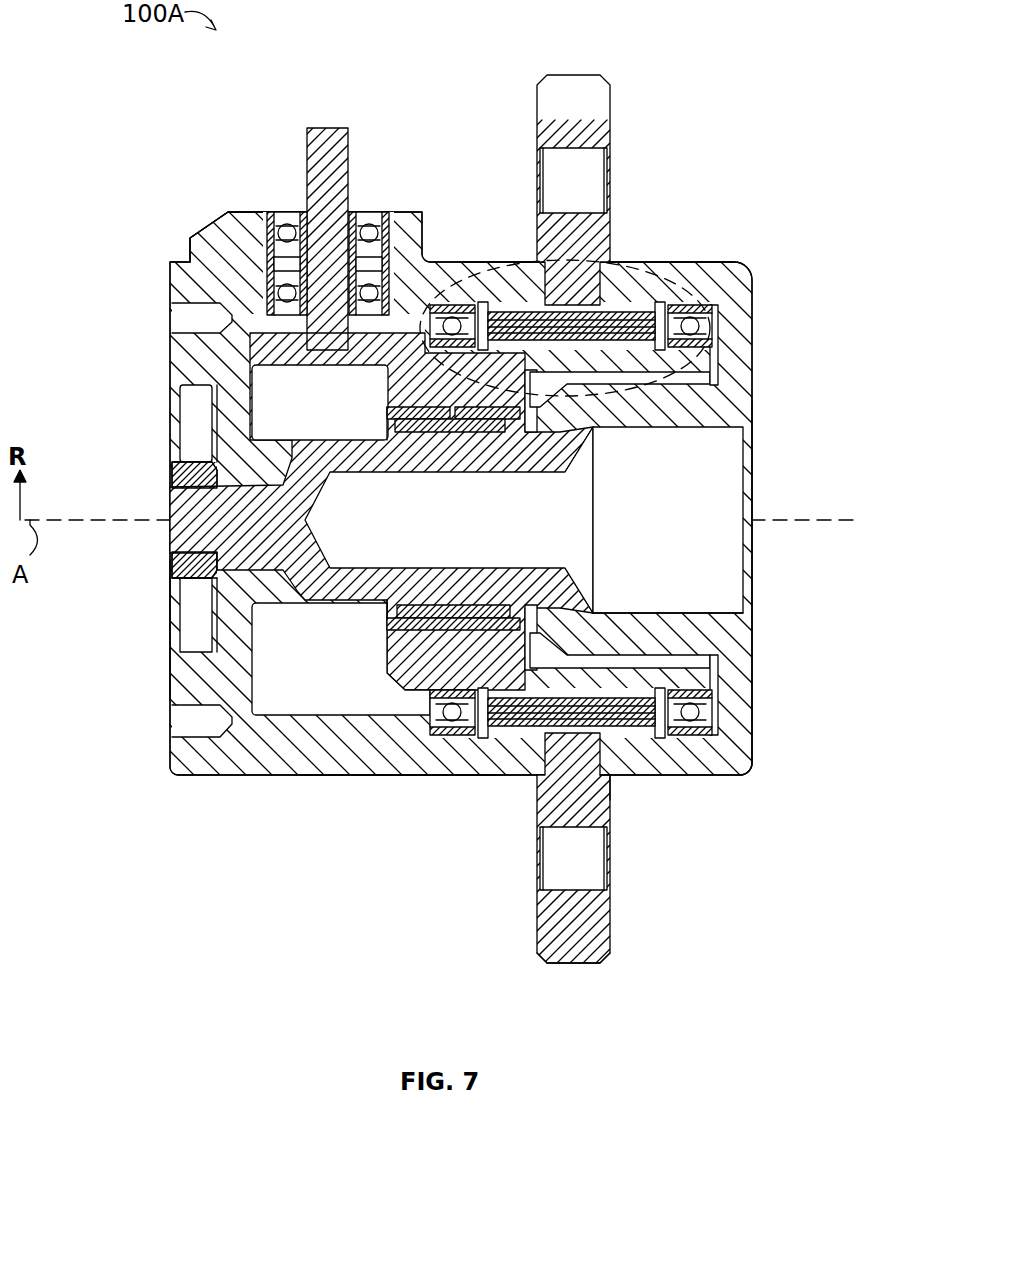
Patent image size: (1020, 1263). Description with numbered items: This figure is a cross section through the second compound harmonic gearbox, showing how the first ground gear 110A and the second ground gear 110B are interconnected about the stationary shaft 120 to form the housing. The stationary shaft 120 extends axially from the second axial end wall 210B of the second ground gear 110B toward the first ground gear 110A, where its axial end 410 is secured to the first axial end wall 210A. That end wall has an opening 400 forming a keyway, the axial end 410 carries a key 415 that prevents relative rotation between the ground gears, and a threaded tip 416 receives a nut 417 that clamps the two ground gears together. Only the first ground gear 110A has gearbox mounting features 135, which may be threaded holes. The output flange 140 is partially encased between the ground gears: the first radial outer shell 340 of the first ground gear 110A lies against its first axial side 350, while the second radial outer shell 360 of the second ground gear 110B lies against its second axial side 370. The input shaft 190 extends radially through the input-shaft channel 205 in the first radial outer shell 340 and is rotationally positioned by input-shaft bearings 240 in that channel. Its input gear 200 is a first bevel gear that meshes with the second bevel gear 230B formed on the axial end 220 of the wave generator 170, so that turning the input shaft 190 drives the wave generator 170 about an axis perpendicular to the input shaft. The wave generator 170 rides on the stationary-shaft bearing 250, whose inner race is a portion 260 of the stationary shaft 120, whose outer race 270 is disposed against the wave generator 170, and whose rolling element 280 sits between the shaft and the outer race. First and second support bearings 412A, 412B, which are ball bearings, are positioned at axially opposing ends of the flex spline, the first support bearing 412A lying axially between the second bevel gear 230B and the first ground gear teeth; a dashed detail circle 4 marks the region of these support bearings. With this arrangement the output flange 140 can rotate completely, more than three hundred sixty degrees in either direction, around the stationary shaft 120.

The input shaft 190 is at (330, 140).
The input-shaft channel 205 is at (290, 225).
The input-shaft bearings 240 is at (252, 228).
The first support bearing 412A is at (445, 318).
The second support bearing 412B is at (695, 312).
The detail view reference 4 is at (688, 268).
The second axial end wall 210B is at (745, 362).
The second bevel gear 230B is at (385, 375).
The input gear 200 is at (212, 395).
The opening 400 is at (200, 472).
The threaded tip 416 is at (180, 527).
The axial end 410 is at (176, 544).
The nut 417 is at (178, 577).
The stationary-shaft bearing outer race 270 is at (375, 442).
The stationary-shaft bearing 250 is at (457, 440).
The stationary-shaft bearing rolling element 280 is at (500, 455).
The portion of the stationary shaft 260 is at (495, 505).
The axial end 220 is at (411, 364).
The wave generator 170 is at (615, 690).
The stationary shaft 120 is at (680, 628).
The key 415 is at (265, 605).
The first axial end wall 210A is at (185, 668).
The gearbox mounting features 135 is at (176, 742).
The first ground gear 110A is at (262, 777).
The first radial outer shell 340 is at (368, 758).
The second axial side 370 is at (612, 808).
The second radial outer shell 360 is at (735, 778).
The first axial side 350 is at (535, 915).
The output flange 140 is at (612, 920).
The second ground gear 110B is at (735, 710).